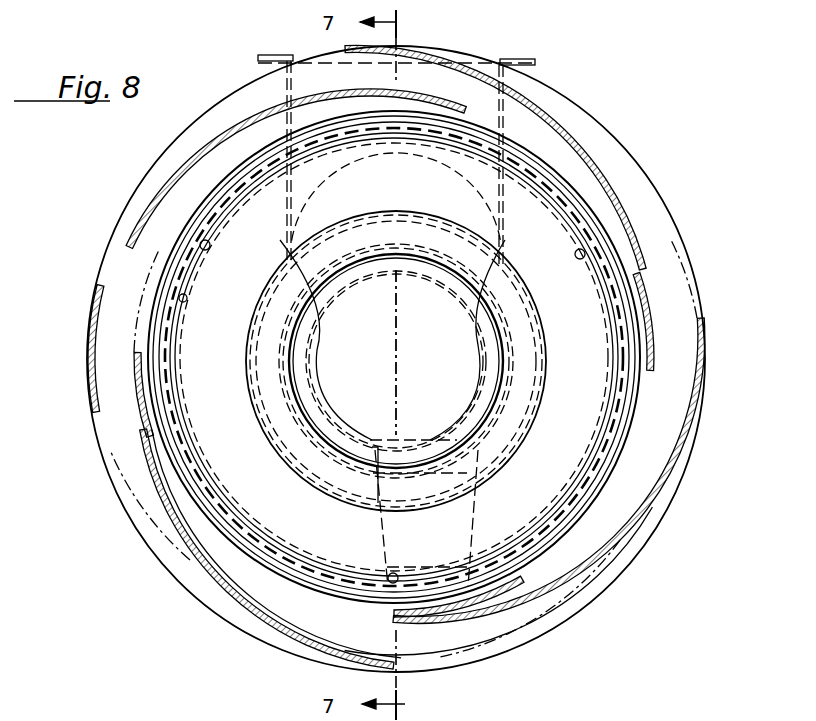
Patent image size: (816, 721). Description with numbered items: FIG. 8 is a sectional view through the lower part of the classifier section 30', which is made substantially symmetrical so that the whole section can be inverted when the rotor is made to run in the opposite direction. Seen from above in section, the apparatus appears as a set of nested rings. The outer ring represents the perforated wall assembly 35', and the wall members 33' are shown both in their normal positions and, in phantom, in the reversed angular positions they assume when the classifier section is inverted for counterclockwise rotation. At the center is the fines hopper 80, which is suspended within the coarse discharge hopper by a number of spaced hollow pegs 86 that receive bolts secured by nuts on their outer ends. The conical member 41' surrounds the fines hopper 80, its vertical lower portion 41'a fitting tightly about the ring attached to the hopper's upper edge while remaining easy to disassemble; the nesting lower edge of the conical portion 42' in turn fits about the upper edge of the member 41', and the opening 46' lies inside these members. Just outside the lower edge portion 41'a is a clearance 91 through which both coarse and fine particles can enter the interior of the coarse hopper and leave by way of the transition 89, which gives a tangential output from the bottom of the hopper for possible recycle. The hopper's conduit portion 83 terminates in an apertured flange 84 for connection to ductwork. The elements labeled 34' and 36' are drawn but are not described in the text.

The classifier section 30' is at (561, 471).
The wall members 33' is at (402, 357).
The outer shell 34' is at (79, 349).
The wall assembly 35' is at (394, 357).
The ring 36' is at (395, 357).
The conical member 41' is at (394, 357).
The vertical lower portion 41'a is at (362, 361).
The conical portion 42' is at (426, 315).
The opening 46' is at (354, 361).
The fines hopper 80 is at (437, 442).
The conduit portion 83 is at (268, 86).
The apertured flange 84 is at (515, 59).
The hollow pegs 86 is at (212, 243).
The transition 89 is at (474, 527).
The clearance 91 is at (193, 460).